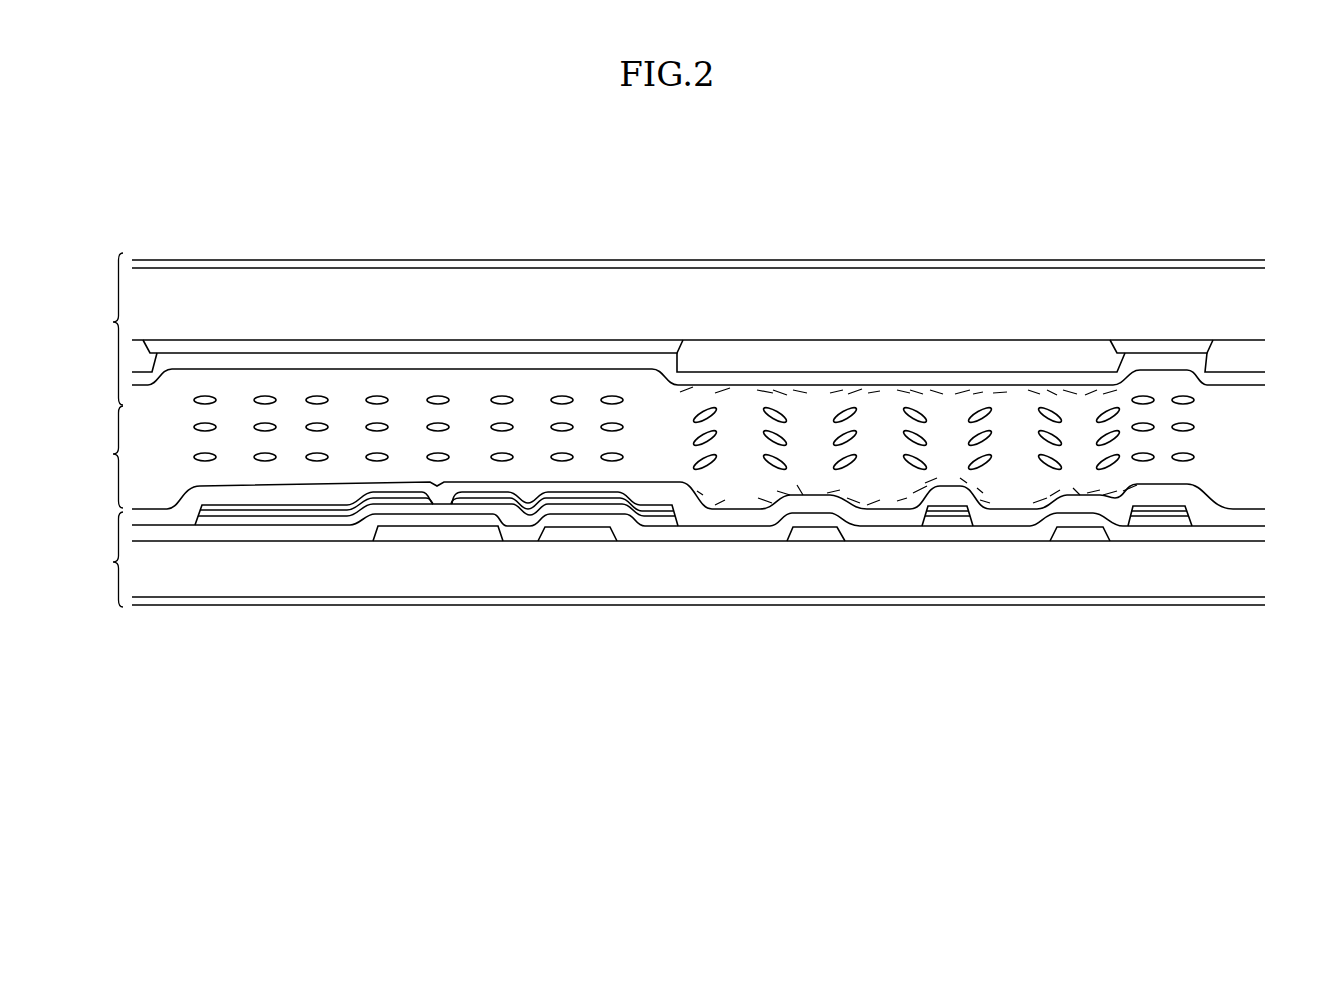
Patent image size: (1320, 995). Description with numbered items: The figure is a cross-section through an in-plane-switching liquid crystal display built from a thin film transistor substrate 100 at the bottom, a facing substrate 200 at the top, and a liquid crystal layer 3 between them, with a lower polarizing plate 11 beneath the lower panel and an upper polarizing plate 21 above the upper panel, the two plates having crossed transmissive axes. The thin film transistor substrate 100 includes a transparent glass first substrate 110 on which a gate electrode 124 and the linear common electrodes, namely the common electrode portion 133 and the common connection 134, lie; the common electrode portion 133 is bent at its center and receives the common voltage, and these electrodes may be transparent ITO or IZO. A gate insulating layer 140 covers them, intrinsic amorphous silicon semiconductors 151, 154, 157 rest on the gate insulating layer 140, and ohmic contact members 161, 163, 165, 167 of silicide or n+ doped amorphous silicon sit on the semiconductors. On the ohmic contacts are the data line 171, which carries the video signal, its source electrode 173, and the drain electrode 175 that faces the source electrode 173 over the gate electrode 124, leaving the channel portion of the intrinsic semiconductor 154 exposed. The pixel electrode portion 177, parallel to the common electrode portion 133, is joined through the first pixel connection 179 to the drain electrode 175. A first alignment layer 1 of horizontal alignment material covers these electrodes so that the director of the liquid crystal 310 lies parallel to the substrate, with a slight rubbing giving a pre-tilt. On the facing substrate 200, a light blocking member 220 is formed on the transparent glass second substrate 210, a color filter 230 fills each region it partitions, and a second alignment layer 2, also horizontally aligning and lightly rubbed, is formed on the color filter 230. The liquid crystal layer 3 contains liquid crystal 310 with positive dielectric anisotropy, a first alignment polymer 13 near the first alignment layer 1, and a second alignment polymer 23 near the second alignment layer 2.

The first alignment layer 1 is at (1238, 516).
The second alignment layer 2 is at (608, 362).
The liquid crystal layer 3 is at (109, 457).
The lower polarizing plate 11 is at (1048, 598).
The first alignment polymer 13 is at (787, 496).
The upper polarizing plate 21 is at (983, 263).
The second alignment polymer 23 is at (1053, 392).
The thin film transistor substrate 100 is at (96, 559).
The first substrate 110 is at (272, 583).
The gate electrode 124 is at (440, 535).
The common electrode portion 133 is at (832, 536).
The common connection 134 is at (593, 536).
The gate insulating layer 140 is at (707, 533).
The intrinsic semiconductor 151 is at (233, 519).
The intrinsic semiconductor 154 is at (372, 520).
The intrinsic semiconductor 157 is at (953, 521).
The ohmic contact member 161 is at (213, 508).
The ohmic contact member 163 is at (333, 513).
The ohmic contact member 165 is at (492, 499).
The ohmic contact member 167 is at (942, 513).
The data line 171 is at (205, 507).
The source electrode 173 is at (352, 516).
The drain electrode 175 is at (487, 493).
The pixel electrode portion 177 is at (663, 511).
The first pixel connection 179 is at (570, 493).
The facing substrate 200 is at (96, 329).
The second substrate 210 is at (510, 297).
The light blocking member 220 is at (403, 347).
The color filter 230 is at (852, 347).
The liquid crystal 310 is at (1190, 429).